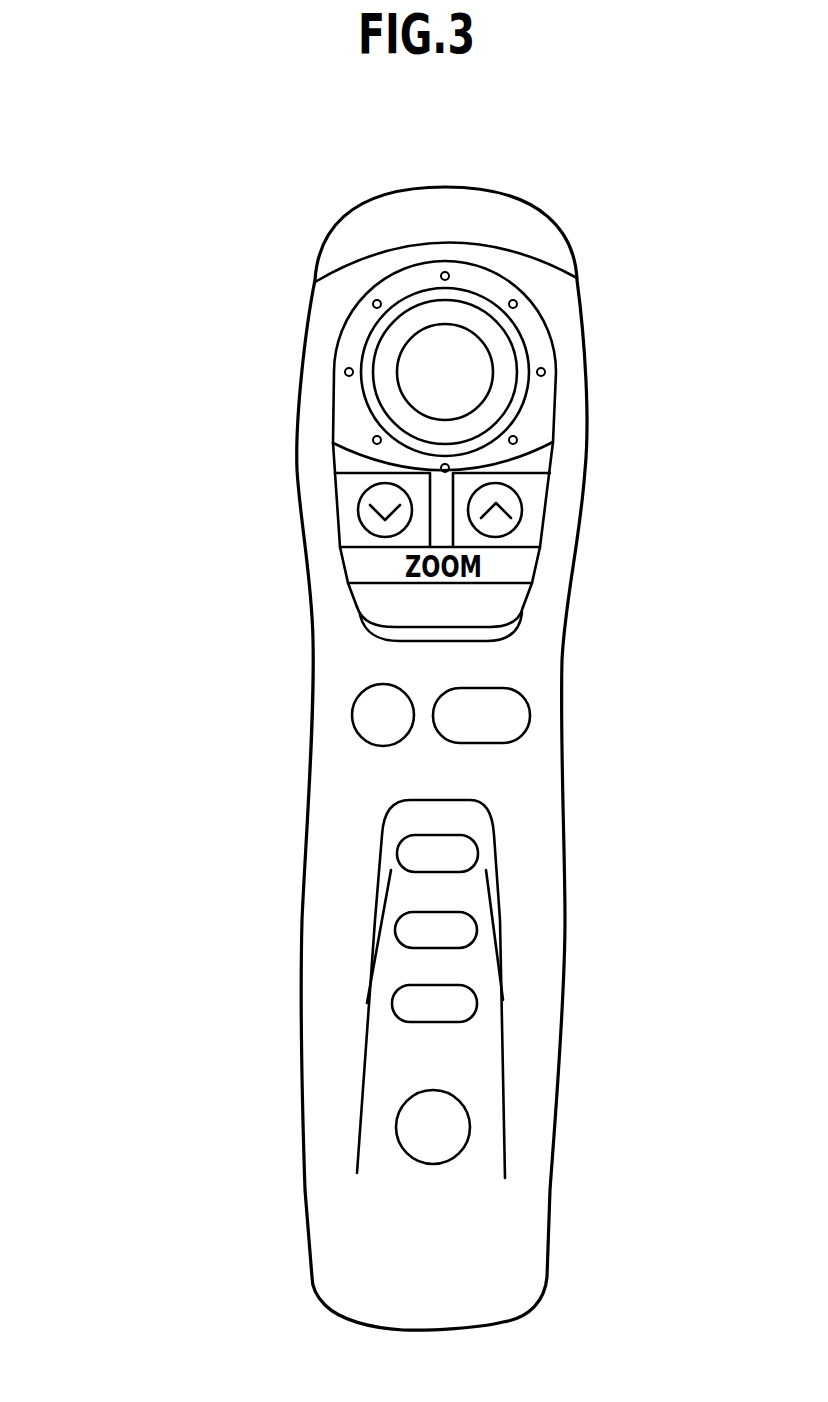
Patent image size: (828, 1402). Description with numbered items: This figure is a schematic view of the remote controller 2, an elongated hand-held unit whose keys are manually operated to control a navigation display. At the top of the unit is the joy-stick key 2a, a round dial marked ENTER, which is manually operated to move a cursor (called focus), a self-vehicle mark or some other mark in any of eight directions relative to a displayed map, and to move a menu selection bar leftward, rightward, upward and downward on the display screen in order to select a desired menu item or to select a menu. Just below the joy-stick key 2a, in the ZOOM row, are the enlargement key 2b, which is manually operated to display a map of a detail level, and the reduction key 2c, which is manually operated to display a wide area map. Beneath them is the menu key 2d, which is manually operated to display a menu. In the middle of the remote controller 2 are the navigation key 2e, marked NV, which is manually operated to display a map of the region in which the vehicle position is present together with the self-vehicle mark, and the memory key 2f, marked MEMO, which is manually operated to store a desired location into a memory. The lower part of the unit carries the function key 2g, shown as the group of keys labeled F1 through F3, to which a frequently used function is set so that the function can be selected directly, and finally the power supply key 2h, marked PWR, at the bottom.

The remote controller 2 is at (222, 425).
The joy-stick key 2a is at (542, 395).
The enlargement key 2b is at (360, 524).
The reduction key 2c is at (523, 503).
The menu key 2d is at (362, 606).
The navigation key 2e is at (353, 730).
The memory key 2f is at (530, 714).
The function key 2g is at (353, 838).
The power supply key 2h is at (470, 1123).